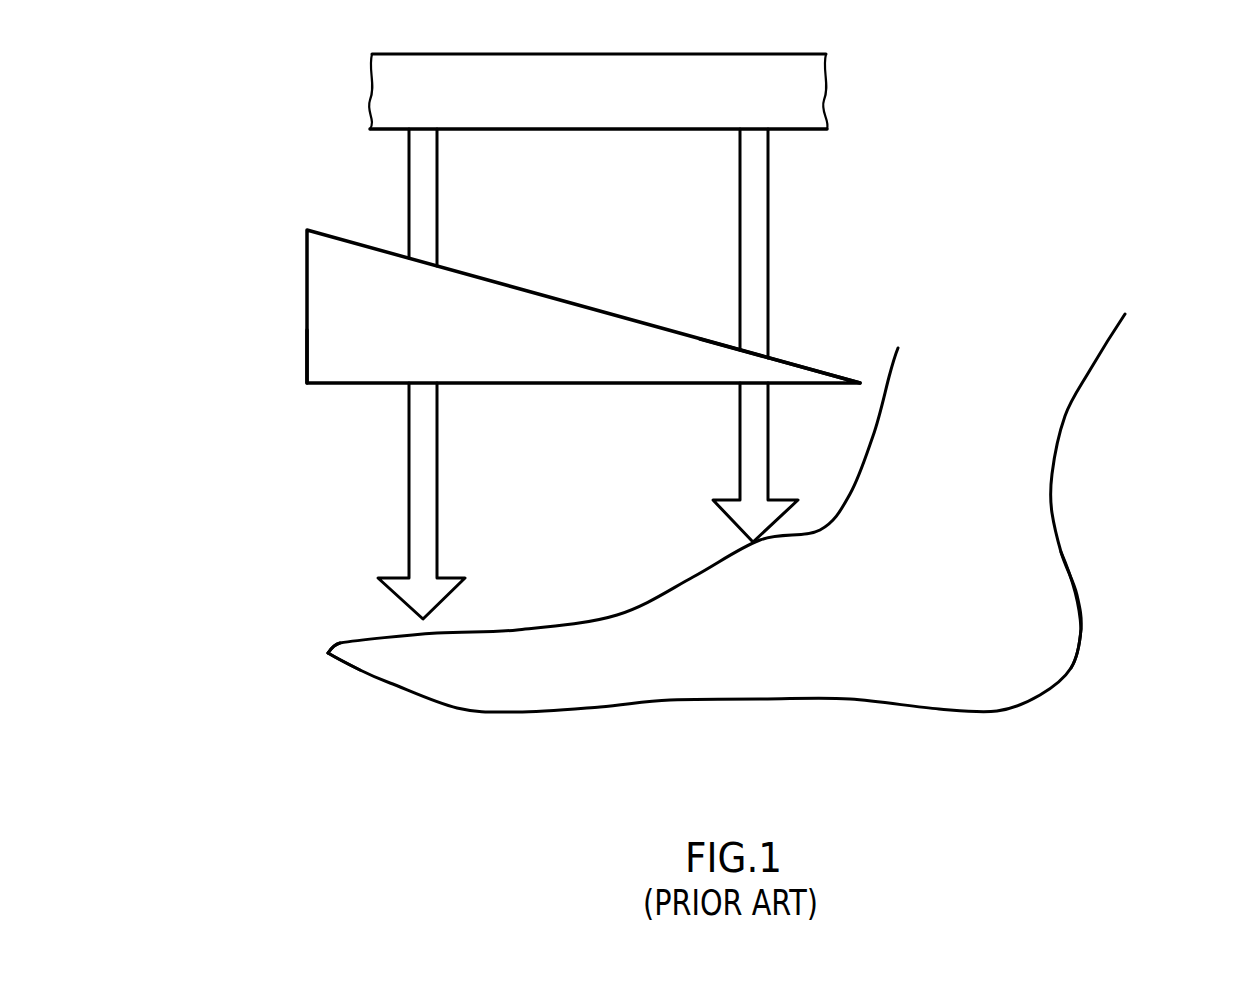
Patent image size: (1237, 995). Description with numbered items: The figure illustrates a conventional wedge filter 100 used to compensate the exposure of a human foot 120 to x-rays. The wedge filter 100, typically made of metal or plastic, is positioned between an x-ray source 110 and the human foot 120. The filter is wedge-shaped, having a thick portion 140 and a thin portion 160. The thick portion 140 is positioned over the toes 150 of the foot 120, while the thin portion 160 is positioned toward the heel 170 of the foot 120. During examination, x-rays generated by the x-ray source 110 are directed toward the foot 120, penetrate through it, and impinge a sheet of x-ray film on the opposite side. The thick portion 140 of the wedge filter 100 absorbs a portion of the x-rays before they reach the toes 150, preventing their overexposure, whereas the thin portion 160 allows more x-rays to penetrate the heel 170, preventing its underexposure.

The wedge filter 100 is at (297, 392).
The x-ray source 110 is at (827, 54).
The human foot 120 is at (945, 728).
The thick portion 140 is at (305, 229).
The toes 150 is at (328, 655).
The thin portion 160 is at (805, 368).
The heel 170 is at (1081, 590).